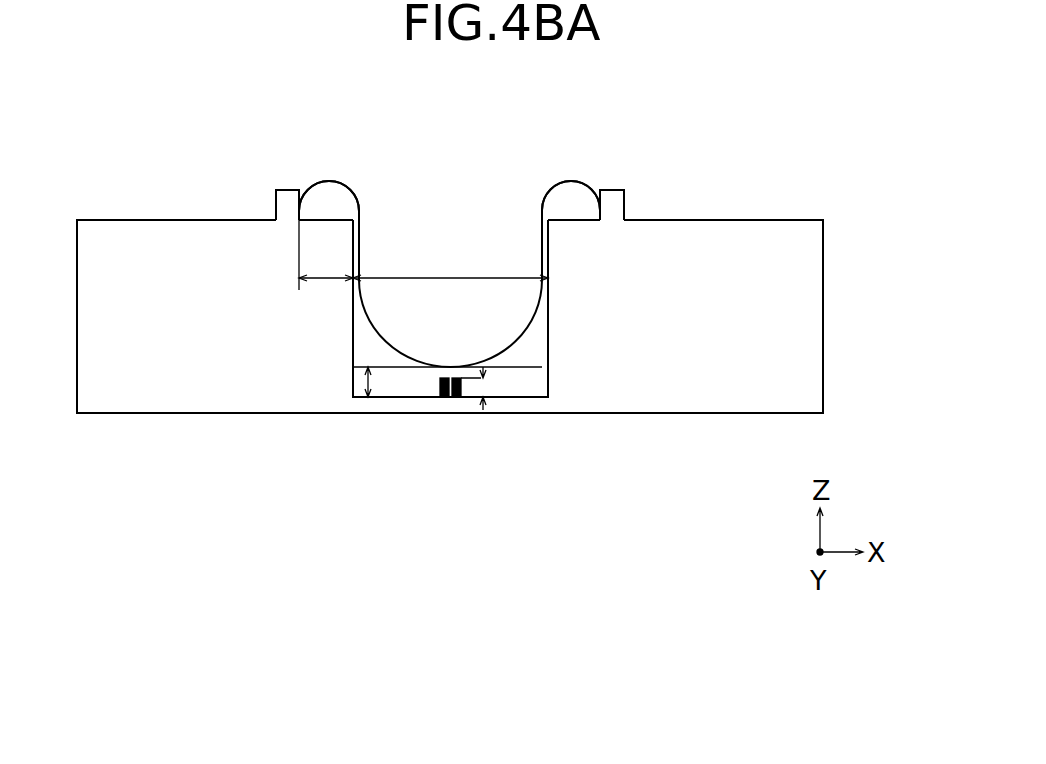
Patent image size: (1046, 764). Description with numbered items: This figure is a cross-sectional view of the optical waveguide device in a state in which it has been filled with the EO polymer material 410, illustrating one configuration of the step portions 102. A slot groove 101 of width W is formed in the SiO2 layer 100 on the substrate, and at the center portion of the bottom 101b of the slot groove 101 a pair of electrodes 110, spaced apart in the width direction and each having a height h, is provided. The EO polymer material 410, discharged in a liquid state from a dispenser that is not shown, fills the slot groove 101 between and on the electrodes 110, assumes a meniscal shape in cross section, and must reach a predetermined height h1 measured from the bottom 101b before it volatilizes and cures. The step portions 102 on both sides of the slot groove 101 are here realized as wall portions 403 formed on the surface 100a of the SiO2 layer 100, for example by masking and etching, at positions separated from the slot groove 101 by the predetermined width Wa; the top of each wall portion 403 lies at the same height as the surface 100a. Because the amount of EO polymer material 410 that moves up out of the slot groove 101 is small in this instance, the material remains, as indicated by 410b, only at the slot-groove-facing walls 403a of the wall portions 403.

The SiO2 layer 100 is at (812, 288).
The surface of the SiO2 layer 100a is at (718, 227).
The slot groove 101 is at (447, 242).
The bottom of the slot groove 101b is at (418, 397).
The step portion 102 is at (313, 170).
The electrodes 110 is at (455, 397).
The wall portion 403 is at (290, 190).
The slot-groove-facing wall 403a is at (298, 188).
The EO polymer material 410 is at (533, 382).
The remaining EO polymer material 410b is at (343, 207).
The width of the slot groove W is at (450, 263).
The predetermined width Wa is at (326, 254).
The height of the electrodes h is at (482, 383).
The height of the EO polymer material h1 is at (383, 385).